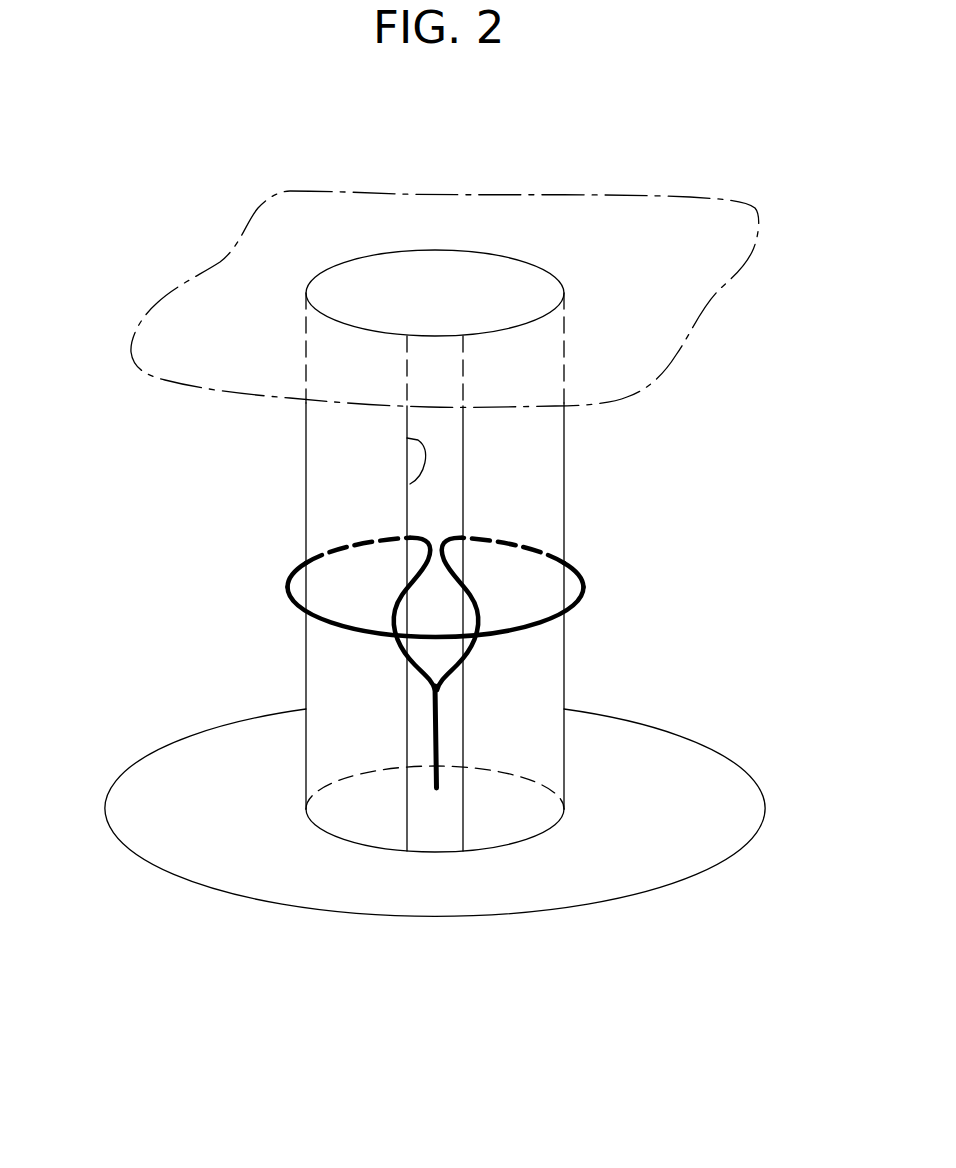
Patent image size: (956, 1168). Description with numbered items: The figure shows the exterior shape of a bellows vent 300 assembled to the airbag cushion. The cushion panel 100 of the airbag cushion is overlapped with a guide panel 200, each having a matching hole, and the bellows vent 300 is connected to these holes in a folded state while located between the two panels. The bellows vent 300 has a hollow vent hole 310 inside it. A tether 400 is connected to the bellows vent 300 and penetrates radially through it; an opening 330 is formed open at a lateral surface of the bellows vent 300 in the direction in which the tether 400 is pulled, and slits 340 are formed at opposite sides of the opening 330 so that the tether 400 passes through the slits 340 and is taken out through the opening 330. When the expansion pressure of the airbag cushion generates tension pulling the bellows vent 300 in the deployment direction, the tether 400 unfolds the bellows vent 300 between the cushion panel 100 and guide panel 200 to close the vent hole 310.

The cushion panel 100 is at (222, 145).
The guide panel 200 is at (272, 870).
The bellows vent 300 is at (572, 463).
The vent hole 310 is at (450, 280).
The opening 330 is at (410, 484).
The slits 340 is at (398, 653).
The tether 400 is at (435, 733).